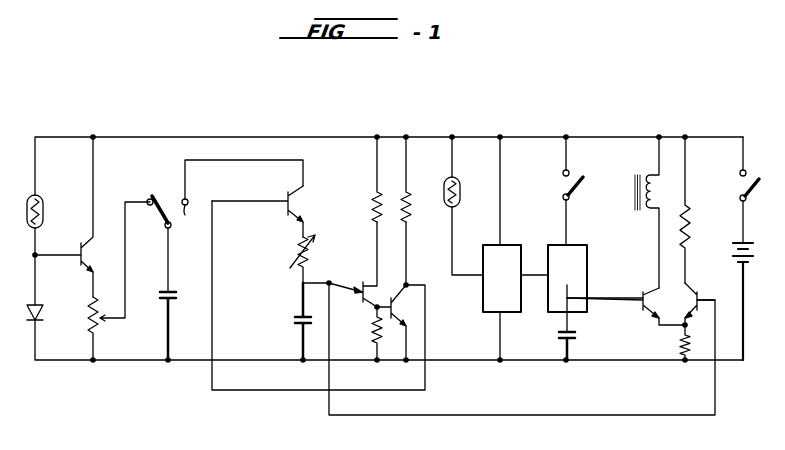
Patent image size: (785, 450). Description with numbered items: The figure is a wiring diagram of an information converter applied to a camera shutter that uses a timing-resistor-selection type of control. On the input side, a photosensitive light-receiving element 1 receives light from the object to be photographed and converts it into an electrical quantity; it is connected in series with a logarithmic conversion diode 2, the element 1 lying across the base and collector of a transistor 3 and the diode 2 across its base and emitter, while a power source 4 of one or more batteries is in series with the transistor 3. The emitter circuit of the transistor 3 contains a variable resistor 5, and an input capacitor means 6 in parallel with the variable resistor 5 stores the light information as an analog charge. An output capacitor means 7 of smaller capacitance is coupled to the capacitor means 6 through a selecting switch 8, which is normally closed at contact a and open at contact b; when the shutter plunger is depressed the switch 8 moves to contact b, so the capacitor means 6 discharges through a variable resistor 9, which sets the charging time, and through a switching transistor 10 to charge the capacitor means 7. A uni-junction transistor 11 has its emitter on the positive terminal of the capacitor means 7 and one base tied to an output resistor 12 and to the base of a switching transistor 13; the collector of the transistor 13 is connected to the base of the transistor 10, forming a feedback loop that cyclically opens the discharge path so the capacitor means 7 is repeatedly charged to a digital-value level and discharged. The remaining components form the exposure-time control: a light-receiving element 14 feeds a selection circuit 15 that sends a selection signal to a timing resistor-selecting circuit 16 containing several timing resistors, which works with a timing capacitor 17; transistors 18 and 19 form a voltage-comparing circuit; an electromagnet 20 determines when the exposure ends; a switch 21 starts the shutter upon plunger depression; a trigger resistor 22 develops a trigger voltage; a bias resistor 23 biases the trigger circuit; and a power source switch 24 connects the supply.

The light-receiving element 1 is at (44, 212).
The logarithmic conversion diode 2 is at (43, 316).
The transistor 3 is at (86, 275).
The power source 4 is at (752, 253).
The variable resistor 5 is at (88, 328).
The input capacitor means 6 is at (158, 312).
The output capacitor means 7 is at (292, 327).
The selecting switch 8 is at (167, 199).
The variable resistor 9 is at (296, 253).
The switching transistor 10 is at (305, 204).
The uni-junction transistor 11 is at (367, 282).
The output resistor 12 is at (373, 328).
The switching transistor 13 is at (408, 308).
The light-receiving element 14 is at (461, 192).
The selection circuit 15 is at (503, 262).
The timing resistor-selecting circuit 16 is at (573, 258).
The timing capacitor 17 is at (576, 336).
The transistor 18 is at (641, 290).
The transistor 19 is at (699, 290).
The electromagnet 20 is at (641, 212).
The switch 21 is at (562, 186).
The trigger resistor 22 is at (679, 344).
The bias resistor 23 is at (690, 217).
The power source switch 24 is at (739, 189).